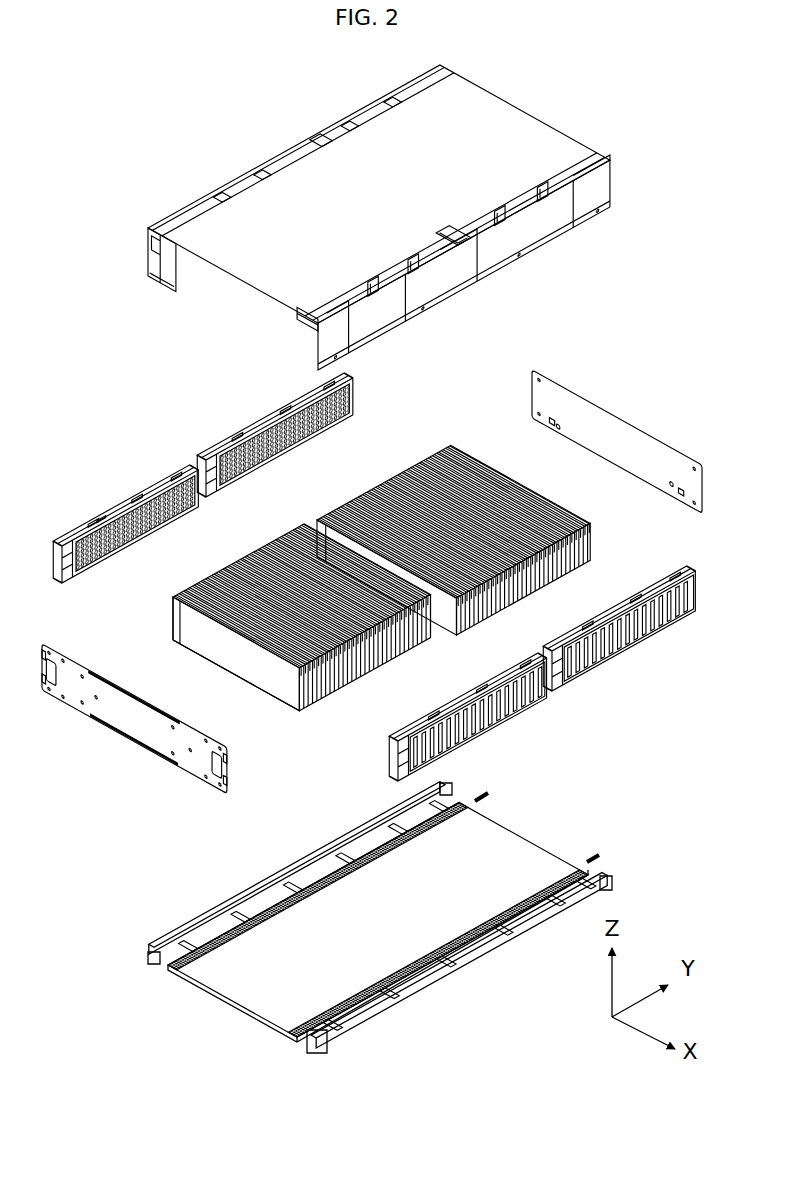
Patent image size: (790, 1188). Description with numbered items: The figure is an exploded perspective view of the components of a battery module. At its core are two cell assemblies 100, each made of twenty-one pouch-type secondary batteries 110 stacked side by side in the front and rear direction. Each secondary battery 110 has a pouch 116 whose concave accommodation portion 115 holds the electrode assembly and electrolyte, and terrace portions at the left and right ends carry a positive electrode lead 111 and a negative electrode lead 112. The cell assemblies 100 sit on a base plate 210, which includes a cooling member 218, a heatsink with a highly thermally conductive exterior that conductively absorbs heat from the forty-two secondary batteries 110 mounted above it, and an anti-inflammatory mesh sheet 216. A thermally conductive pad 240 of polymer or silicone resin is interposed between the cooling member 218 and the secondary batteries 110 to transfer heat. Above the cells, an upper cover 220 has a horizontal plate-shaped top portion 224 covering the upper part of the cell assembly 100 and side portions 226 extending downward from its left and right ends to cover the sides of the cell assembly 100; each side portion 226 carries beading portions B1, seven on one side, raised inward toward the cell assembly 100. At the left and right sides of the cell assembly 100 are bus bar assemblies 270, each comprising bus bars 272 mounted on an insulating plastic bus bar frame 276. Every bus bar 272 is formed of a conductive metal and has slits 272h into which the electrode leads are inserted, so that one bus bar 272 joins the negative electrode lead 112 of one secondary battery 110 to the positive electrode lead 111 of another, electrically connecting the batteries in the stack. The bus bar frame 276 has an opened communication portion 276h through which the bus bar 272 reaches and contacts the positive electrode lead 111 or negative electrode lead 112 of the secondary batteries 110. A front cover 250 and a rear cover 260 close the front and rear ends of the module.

The cell assembly 100 is at (374, 475).
The secondary battery 110 is at (175, 648).
The positive electrode lead 111 is at (170, 620).
The negative electrode lead 112 is at (318, 716).
The accommodation portion 115 is at (240, 655).
The pouch 116 is at (295, 722).
The base plate 210 is at (292, 856).
The anti-inflammatory mesh sheet 216 is at (366, 845).
The cooling member 218 is at (230, 1005).
The upper cover 220 is at (290, 152).
The top portion 224 is at (272, 228).
The side portion 226 is at (150, 242).
The thermally conductive pad 240 is at (494, 835).
The front cover 250 is at (122, 745).
The rear cover 260 is at (622, 408).
The bus bar assembly 270 is at (263, 408).
The bus bar 272 is at (487, 732).
The slit 272h is at (497, 712).
The bus bar frame 276 is at (442, 726).
The communication portion 276h is at (104, 553).
The beading portion B1 is at (463, 252).